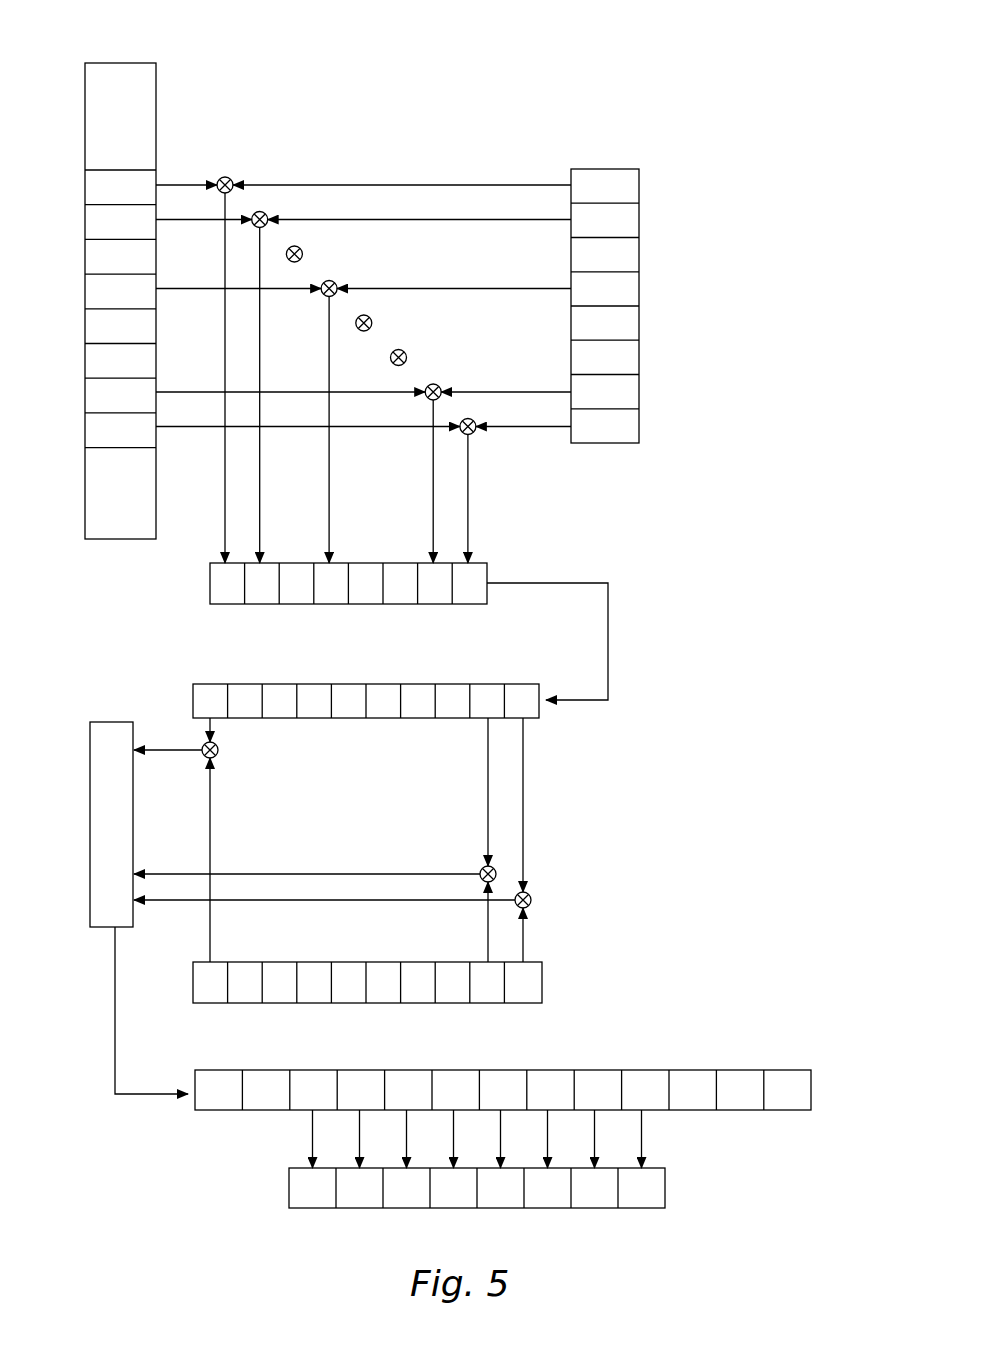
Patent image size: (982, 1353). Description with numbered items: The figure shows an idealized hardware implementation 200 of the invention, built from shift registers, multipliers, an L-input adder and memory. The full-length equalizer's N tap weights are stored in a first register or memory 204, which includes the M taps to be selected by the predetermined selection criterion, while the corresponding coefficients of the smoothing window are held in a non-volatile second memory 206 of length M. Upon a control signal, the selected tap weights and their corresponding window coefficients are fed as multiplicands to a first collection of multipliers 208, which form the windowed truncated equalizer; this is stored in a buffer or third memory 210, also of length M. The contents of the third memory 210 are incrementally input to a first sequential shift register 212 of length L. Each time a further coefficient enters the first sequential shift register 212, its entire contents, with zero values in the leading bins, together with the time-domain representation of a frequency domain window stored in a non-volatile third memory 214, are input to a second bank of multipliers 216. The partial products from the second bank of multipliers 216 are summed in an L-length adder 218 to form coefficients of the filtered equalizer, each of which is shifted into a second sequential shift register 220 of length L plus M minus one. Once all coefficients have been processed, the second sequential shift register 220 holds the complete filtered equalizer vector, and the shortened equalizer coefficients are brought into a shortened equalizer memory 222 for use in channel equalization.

The hardware implementation 200 is at (722, 17).
The first register or memory 204 is at (156, 84).
The non-volatile second memory 206 is at (639, 228).
The first collection of multipliers 208 is at (261, 210).
The third memory 210 is at (487, 572).
The first sequential shift register 212 is at (530, 684).
The non-volatile third memory 214 is at (542, 975).
The second bank of multipliers 216 is at (497, 865).
The L-length adder 218 is at (90, 824).
The second sequential shift register 220 is at (740, 1069).
The shortened equalizer memory 222 is at (665, 1192).